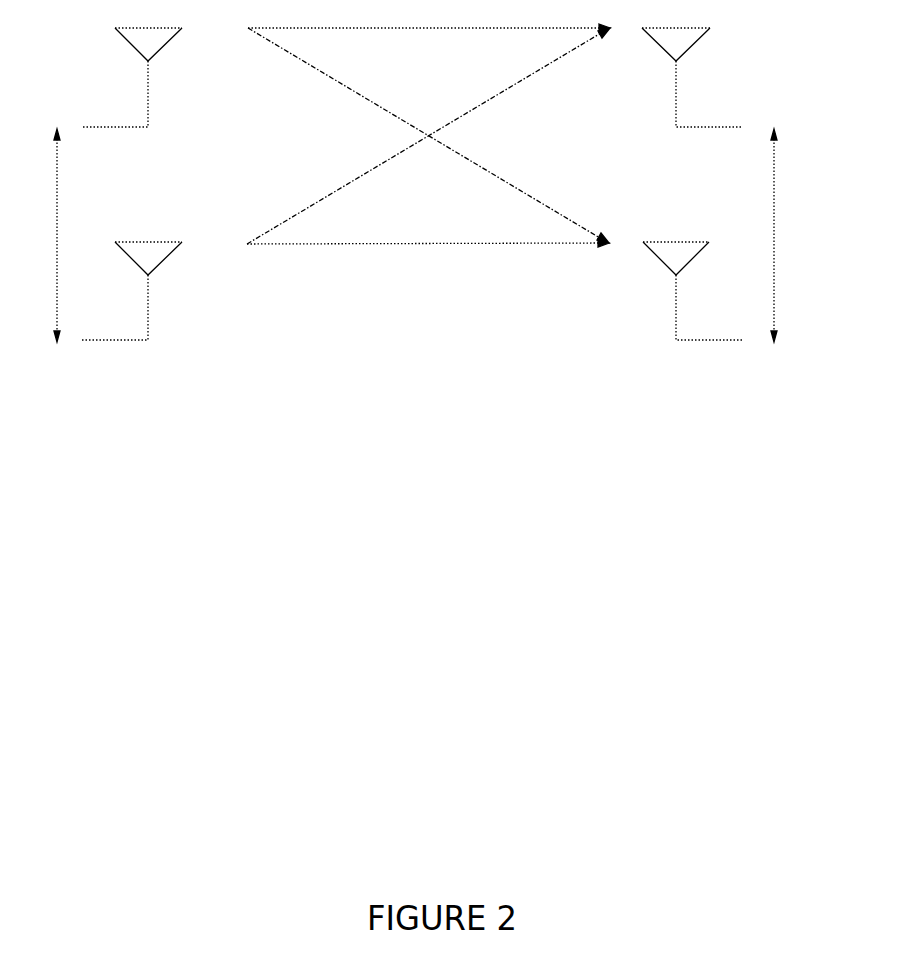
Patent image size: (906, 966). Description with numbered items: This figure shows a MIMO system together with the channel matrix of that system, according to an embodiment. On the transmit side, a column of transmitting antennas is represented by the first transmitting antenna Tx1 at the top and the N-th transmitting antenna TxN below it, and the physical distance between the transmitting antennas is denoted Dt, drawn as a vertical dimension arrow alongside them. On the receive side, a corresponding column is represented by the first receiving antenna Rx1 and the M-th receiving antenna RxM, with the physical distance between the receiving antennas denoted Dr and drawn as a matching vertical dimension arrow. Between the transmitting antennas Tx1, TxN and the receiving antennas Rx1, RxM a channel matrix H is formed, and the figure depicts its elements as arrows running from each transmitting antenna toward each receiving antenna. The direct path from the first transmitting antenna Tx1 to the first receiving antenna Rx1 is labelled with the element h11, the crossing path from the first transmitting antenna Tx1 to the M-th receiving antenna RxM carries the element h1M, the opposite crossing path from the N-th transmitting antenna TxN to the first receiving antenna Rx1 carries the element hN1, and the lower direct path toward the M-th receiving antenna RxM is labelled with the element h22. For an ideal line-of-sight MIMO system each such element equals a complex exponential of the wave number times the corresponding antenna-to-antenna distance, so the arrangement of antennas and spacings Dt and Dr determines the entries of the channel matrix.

The transmitting antenna Tx1 is at (132, 77).
The transmitting antenna TxN is at (132, 291).
The receiving antenna Rx1 is at (692, 77).
The receiving antenna RxM is at (693, 291).
The physical distance between the transmitting antennas Dt is at (38, 235).
The physical distance between receiving antennas Dr is at (798, 235).
The channel matrix element h11 is at (429, 16).
The channel matrix element h1M is at (428, 135).
The channel matrix element hN1 is at (428, 136).
The channel matrix element h22 is at (428, 265).